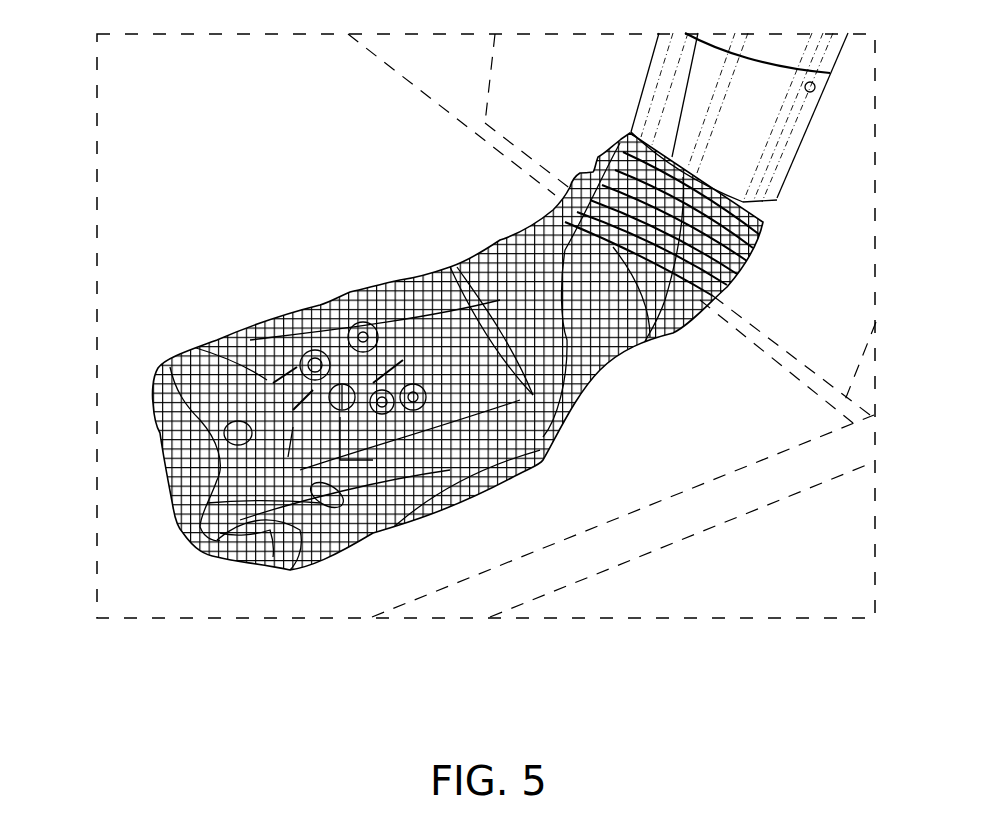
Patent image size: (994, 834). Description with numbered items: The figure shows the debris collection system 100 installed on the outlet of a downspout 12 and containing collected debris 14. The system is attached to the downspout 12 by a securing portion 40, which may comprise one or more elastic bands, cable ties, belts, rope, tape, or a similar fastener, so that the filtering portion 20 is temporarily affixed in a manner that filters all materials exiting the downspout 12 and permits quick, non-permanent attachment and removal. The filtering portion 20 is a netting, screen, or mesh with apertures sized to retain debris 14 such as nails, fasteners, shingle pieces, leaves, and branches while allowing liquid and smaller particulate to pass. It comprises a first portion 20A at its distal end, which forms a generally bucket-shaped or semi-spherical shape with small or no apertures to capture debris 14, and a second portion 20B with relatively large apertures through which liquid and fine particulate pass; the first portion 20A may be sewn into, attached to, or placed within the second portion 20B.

The debris collection system 100 is at (278, 300).
The downspout 12 is at (727, 132).
The debris 14 is at (440, 468).
The filtering portion 20 is at (640, 424).
The first portion 20A is at (223, 507).
The second portion 20B is at (273, 353).
The securing portion 40 is at (777, 200).